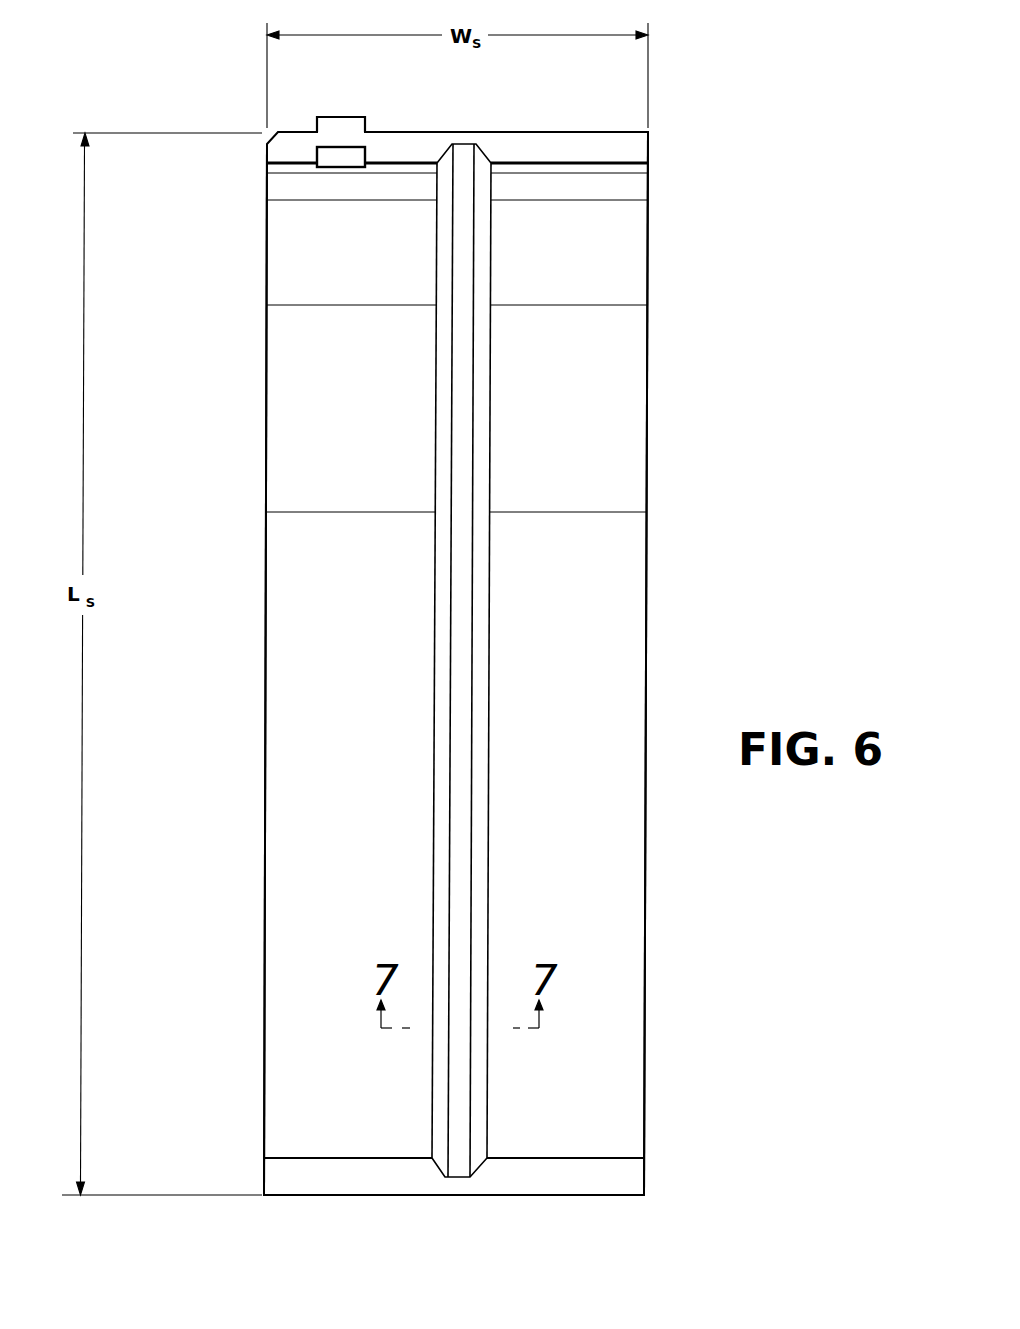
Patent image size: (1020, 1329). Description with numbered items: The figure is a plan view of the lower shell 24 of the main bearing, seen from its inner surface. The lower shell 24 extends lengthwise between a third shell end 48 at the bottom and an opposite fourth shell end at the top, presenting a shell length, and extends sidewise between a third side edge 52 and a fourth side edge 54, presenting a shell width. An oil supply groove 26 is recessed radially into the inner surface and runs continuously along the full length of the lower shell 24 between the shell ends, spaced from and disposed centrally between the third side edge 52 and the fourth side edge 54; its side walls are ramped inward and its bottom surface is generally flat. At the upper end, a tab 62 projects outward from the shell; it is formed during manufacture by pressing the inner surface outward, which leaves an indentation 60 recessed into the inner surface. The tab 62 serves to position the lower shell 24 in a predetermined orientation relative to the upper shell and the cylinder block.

The lower shell 24 is at (466, 651).
The oil supply groove 26 is at (490, 543).
The third shell end 48 is at (587, 1195).
The third side edge 52 is at (648, 350).
The fourth side edge 54 is at (267, 355).
The indentation 60 is at (330, 163).
The tab 62 is at (350, 123).